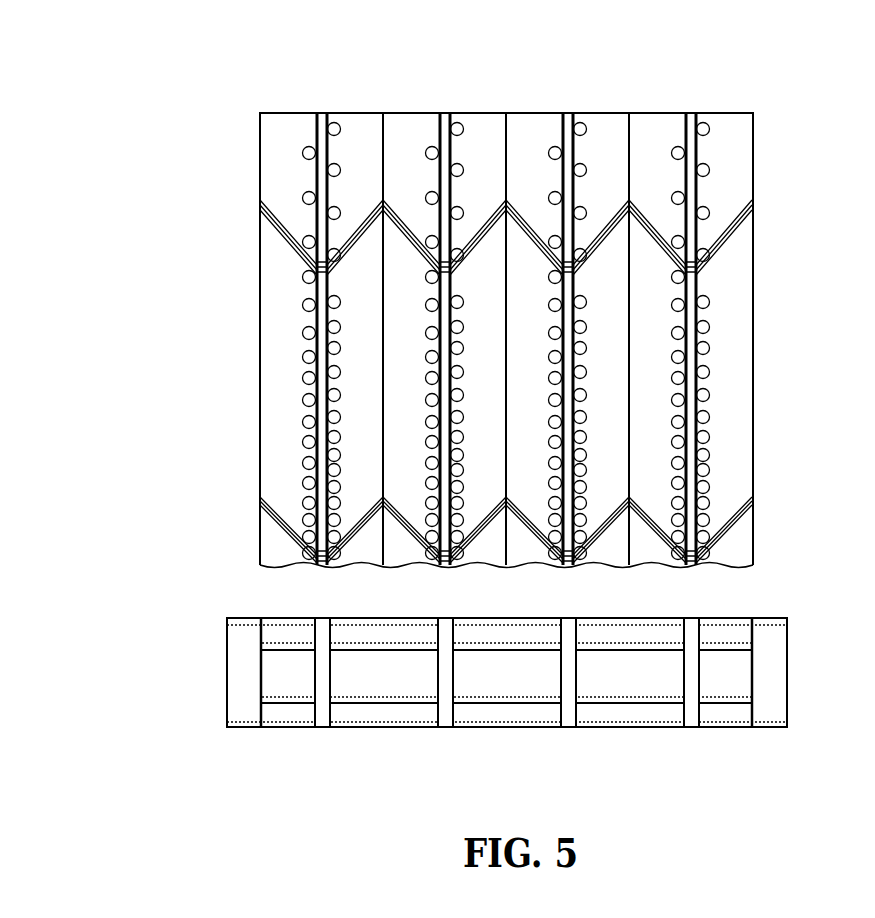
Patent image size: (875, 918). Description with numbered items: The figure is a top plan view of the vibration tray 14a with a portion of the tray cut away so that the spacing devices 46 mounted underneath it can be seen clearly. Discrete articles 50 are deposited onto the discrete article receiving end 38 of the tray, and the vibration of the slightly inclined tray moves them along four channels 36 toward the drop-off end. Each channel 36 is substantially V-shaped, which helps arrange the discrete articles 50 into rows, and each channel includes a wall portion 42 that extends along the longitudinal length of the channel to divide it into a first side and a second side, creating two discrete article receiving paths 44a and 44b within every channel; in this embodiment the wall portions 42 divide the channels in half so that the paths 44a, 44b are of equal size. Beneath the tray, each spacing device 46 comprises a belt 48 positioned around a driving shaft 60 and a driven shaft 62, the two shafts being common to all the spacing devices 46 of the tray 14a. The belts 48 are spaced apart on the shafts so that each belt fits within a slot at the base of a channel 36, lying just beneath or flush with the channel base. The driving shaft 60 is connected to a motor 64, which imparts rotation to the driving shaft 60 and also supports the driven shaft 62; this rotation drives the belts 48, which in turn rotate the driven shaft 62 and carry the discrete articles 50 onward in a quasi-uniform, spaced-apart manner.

The vibration tray 14a is at (130, 129).
The discrete article receiving end 38 is at (772, 127).
The channels 36 is at (357, 424).
The first discrete article receiving path 44a is at (652, 128).
The second discrete article receiving path 44b is at (722, 128).
The wall portion 42 is at (689, 133).
The discrete articles 50 is at (301, 378).
The motor 64 is at (775, 672).
The driven shaft 62 is at (737, 630).
The driving shaft 60 is at (737, 718).
The belt 48 is at (691, 673).
The spacing devices 46 is at (687, 748).